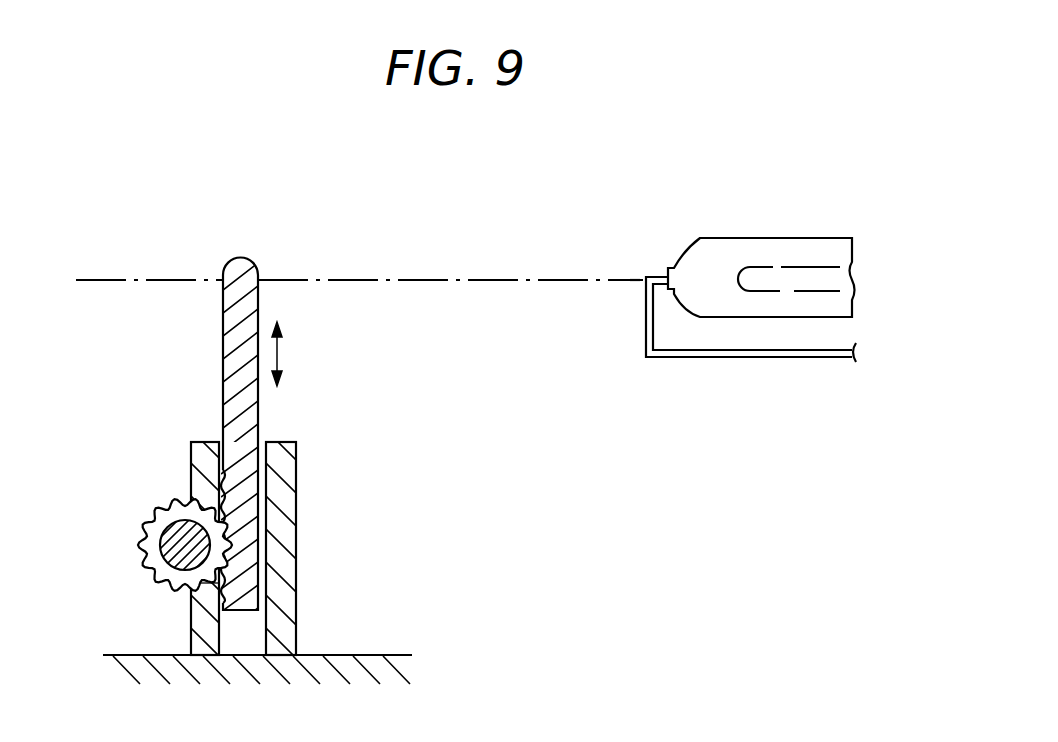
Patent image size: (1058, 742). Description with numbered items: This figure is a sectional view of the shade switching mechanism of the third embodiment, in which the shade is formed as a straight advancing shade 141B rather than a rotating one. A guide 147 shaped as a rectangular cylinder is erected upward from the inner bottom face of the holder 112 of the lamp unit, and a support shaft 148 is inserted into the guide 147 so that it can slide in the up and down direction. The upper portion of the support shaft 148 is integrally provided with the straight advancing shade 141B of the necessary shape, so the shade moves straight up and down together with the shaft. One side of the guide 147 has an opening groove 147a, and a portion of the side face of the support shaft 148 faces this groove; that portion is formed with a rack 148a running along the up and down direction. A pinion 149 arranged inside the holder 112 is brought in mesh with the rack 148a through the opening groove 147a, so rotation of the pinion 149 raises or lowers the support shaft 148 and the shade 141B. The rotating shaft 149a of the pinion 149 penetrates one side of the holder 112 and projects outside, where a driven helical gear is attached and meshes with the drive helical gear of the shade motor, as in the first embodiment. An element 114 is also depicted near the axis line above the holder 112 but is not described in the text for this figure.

The straight advancing shade 141B is at (238, 258).
The support shaft 148 is at (248, 552).
The rack 148a is at (247, 448).
The guide 147 is at (282, 603).
The opening groove 147a is at (193, 605).
The pinion 149 is at (147, 512).
The rotating shaft 149a is at (162, 544).
The holder 112 is at (394, 655).
The cartridge 114 is at (735, 250).